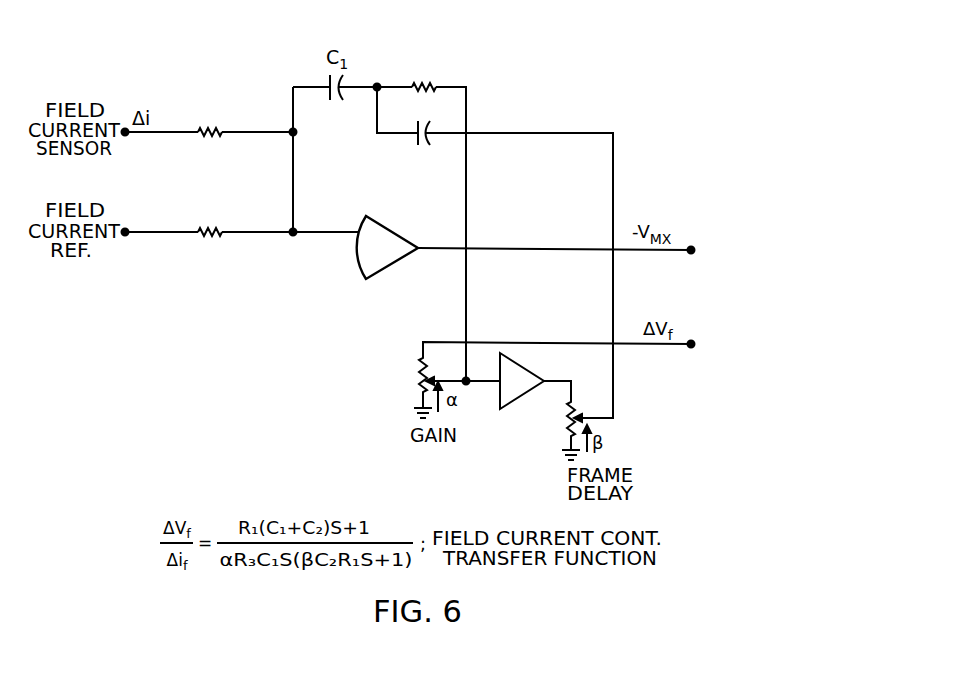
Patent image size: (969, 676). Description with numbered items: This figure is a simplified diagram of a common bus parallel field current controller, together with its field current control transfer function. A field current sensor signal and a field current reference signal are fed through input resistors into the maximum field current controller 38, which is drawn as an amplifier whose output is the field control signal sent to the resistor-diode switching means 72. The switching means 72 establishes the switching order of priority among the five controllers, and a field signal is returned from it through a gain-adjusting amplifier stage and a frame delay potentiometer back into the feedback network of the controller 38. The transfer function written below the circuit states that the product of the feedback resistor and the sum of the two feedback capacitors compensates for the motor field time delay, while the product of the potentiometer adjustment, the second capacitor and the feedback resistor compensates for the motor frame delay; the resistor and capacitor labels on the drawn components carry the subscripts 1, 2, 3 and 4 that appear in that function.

The maximum field current controller 38 is at (348, 292).
The resistor-diode switching means 72 is at (787, 295).
The resistor R1 1 is at (424, 71).
The capacitor C2 2 is at (425, 147).
The resistor R3 3 is at (210, 116).
The resistor R4 4 is at (210, 215).